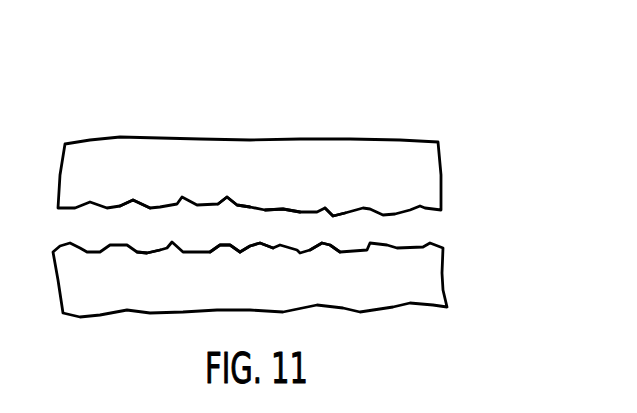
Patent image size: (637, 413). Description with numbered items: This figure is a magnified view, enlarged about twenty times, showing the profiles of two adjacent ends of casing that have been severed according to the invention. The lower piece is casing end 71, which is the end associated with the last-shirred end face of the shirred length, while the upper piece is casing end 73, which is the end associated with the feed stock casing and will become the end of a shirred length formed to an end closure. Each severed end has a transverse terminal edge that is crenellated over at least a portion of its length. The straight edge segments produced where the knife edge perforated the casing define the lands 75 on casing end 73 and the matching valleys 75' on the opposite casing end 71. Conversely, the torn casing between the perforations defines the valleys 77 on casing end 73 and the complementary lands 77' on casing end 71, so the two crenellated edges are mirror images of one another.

The casing end 71 is at (423, 280).
The casing end 73 is at (425, 180).
The lands 75 is at (214, 188).
The valleys 77 is at (290, 187).
The valleys 75' is at (196, 270).
The lands 77' is at (280, 270).